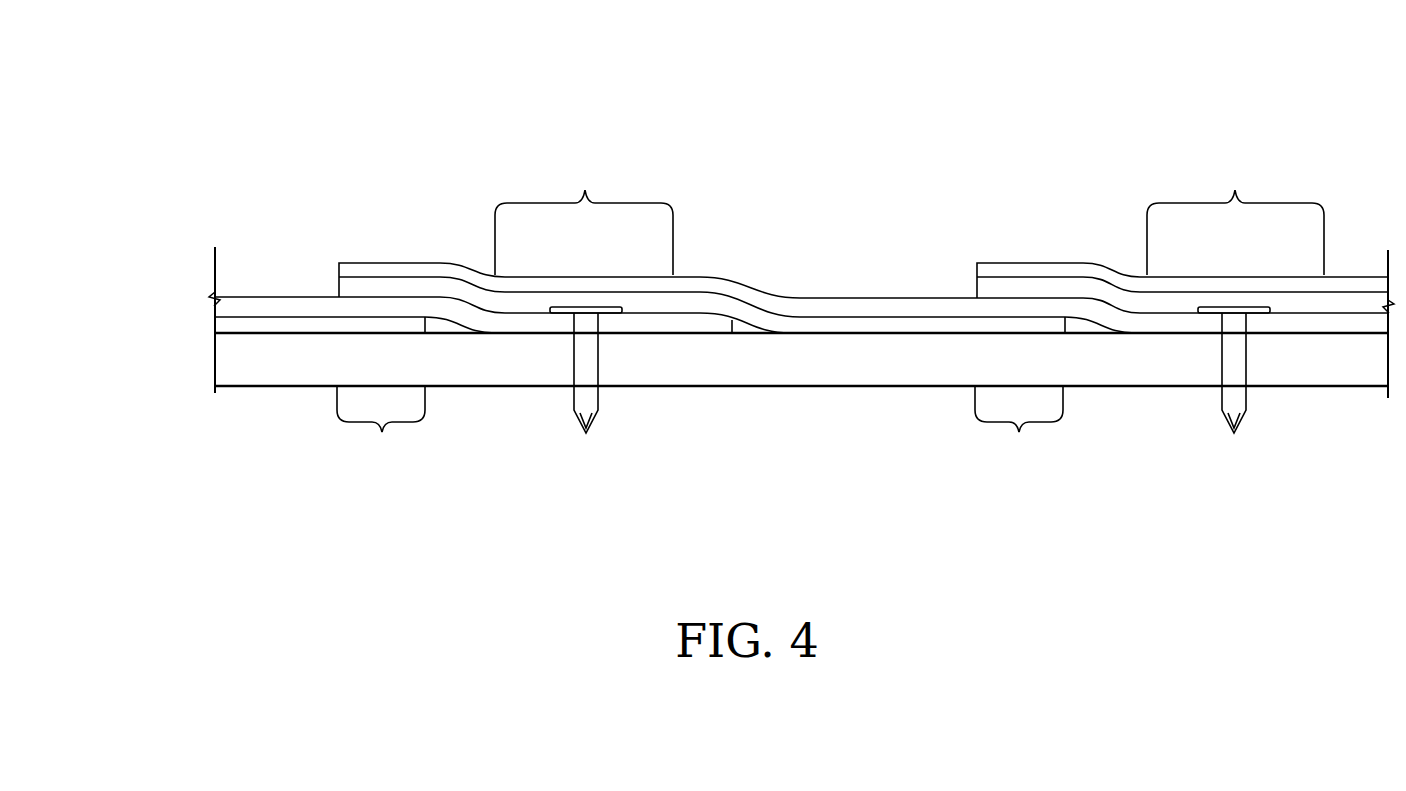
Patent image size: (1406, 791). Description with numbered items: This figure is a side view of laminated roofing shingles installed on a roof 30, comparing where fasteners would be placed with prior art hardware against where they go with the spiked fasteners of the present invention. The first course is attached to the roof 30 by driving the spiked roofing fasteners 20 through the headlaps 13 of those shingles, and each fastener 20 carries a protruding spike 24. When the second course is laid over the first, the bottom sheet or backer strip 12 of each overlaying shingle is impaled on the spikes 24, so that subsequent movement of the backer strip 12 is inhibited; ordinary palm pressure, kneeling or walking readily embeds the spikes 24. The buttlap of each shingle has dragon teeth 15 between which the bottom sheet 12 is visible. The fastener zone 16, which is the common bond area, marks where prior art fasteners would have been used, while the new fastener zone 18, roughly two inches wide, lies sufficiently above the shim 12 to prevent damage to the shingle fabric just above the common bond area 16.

The bottom sheet 12 is at (336, 288).
The headlap 13 is at (708, 325).
The dragon teeth 15 is at (339, 267).
The fastener zone 16 is at (383, 440).
The new fastener zone 18 is at (591, 177).
The spiked roofing fastener 20 is at (599, 402).
The spike 24 is at (591, 307).
The roof 30 is at (203, 370).